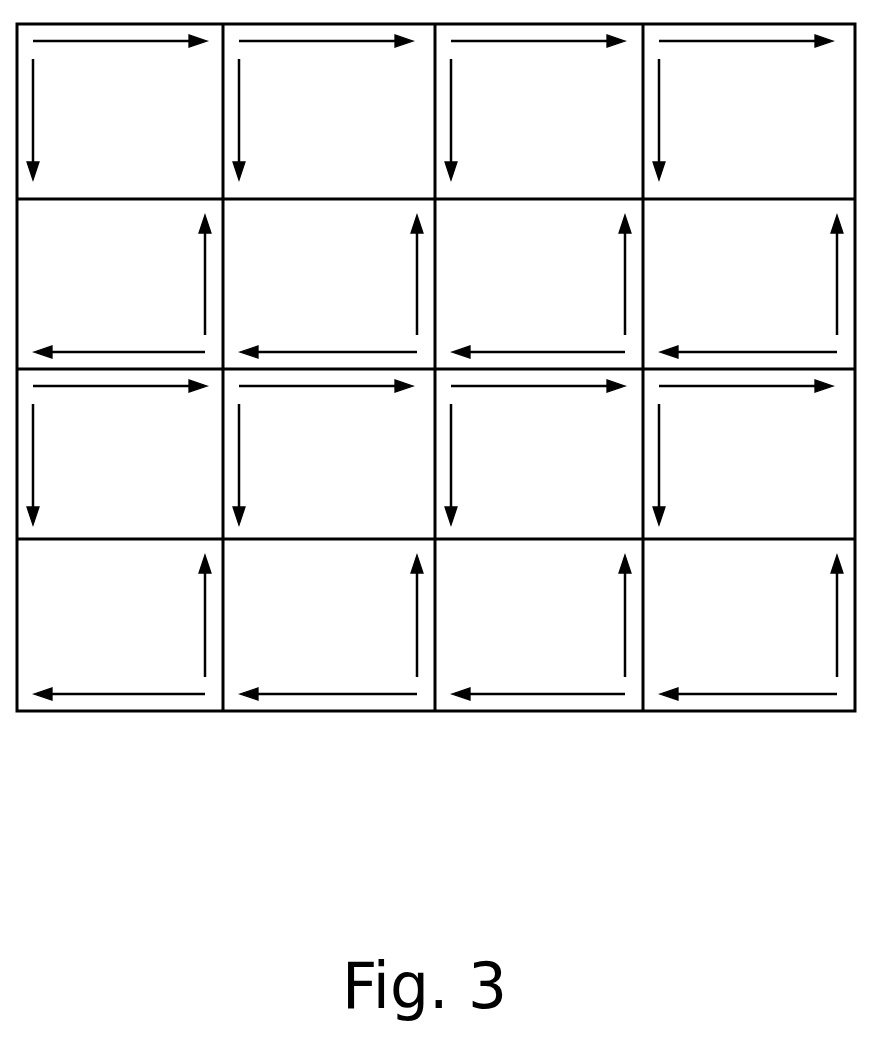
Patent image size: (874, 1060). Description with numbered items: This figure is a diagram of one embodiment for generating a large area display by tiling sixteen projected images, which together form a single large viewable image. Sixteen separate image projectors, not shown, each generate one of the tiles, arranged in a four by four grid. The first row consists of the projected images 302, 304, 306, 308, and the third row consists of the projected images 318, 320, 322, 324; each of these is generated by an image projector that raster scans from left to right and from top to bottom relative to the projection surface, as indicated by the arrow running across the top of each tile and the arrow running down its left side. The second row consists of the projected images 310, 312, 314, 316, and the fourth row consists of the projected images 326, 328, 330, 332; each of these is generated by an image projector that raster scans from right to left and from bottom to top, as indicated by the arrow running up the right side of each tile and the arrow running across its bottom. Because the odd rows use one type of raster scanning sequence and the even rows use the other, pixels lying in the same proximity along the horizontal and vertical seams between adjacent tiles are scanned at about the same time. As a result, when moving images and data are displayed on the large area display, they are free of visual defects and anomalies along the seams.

The projected image 302 is at (98, 121).
The projected image 304 is at (307, 121).
The projected image 306 is at (517, 121).
The projected image 308 is at (727, 121).
The projected image 310 is at (98, 294).
The projected image 312 is at (307, 294).
The projected image 314 is at (517, 294).
The projected image 316 is at (727, 294).
The projected image 318 is at (98, 464).
The projected image 320 is at (307, 464).
The projected image 322 is at (517, 464).
The projected image 324 is at (727, 464).
The projected image 326 is at (98, 635).
The projected image 328 is at (307, 635).
The projected image 330 is at (517, 635).
The projected image 332 is at (727, 635).